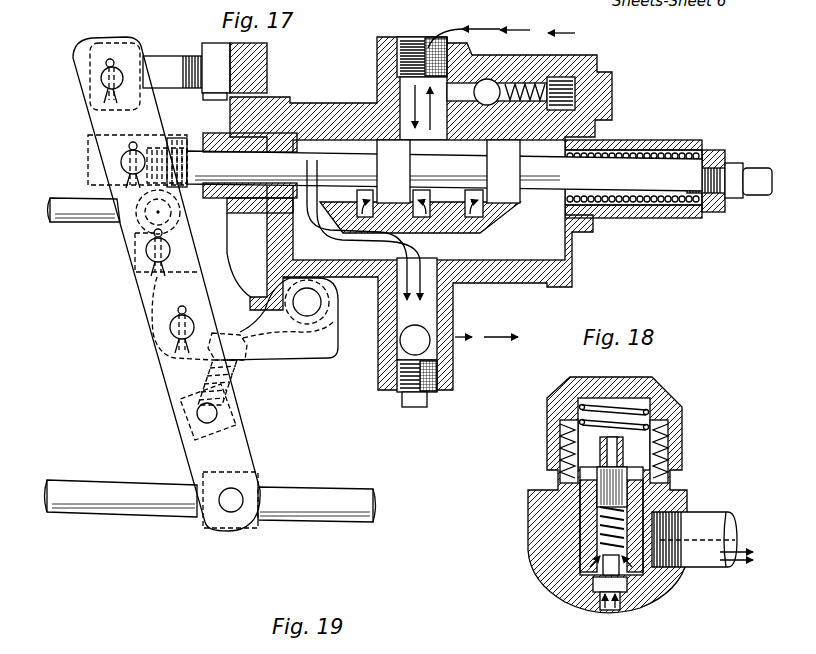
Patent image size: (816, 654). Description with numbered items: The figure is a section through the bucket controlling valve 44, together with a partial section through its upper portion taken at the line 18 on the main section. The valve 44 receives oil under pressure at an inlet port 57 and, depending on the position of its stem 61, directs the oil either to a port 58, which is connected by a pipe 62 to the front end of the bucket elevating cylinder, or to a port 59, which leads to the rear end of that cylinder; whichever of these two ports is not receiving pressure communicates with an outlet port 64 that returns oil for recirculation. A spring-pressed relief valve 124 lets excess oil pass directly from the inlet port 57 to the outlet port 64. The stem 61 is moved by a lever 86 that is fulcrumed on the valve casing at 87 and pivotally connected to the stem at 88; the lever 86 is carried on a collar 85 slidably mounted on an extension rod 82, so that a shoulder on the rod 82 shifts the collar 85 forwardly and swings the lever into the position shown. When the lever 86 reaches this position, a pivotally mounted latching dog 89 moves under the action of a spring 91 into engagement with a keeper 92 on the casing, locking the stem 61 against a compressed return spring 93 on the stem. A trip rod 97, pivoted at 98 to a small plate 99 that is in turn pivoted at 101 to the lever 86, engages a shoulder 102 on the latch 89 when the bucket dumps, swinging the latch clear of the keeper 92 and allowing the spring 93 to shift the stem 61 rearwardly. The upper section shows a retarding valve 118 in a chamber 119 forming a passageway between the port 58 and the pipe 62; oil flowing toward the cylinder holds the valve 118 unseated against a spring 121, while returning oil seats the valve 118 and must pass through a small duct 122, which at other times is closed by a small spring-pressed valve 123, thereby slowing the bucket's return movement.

In FIG. 17, the section line 18— 18 is at (445, 160).
In FIG. 17, the bucket controlling valve 44 is at (560, 250).
In FIG. 17, the inlet port 57 is at (413, 83).
In FIG. 17, the port 58 is at (470, 218).
In FIG. 18, the port 58 is at (613, 607).
In FIG. 17, the port 59 is at (362, 136).
In FIG. 17, the valve stem 61 is at (213, 152).
In FIG. 18, the pipe 62 is at (720, 517).
In FIG. 17, the outlet port 64 is at (430, 343).
In FIG. 17, the extension rod 82 is at (105, 508).
In FIG. 17, the collar 85 is at (206, 530).
In FIG. 17, the lever 86 is at (168, 392).
In FIG. 17, the fulcrum 87 is at (100, 78).
In FIG. 17, the pivotal connection 88 is at (120, 162).
In FIG. 17, the latching dog 89 is at (302, 358).
In FIG. 17, the spring 91 is at (237, 373).
In FIG. 17, the keeper 92 is at (263, 300).
In FIG. 17, the return spring 93 is at (640, 204).
In FIG. 17, the trip rod 97 is at (58, 222).
In FIG. 17, the pivot 98 is at (168, 212).
In FIG. 17, the small plate 99 is at (137, 247).
In FIG. 17, the pivot 101 is at (170, 250).
In FIG. 17, the shoulder 102 is at (157, 288).
In FIG. 18, the retarding valve 118 is at (580, 545).
In FIG. 18, the chamber 119 is at (580, 523).
In FIG. 18, the spring 121 is at (627, 410).
In FIG. 18, the small duct 122 is at (580, 445).
In FIG. 18, the spring-pressed valve 123 is at (623, 487).
In FIG. 17, the relief valve 124 is at (484, 80).